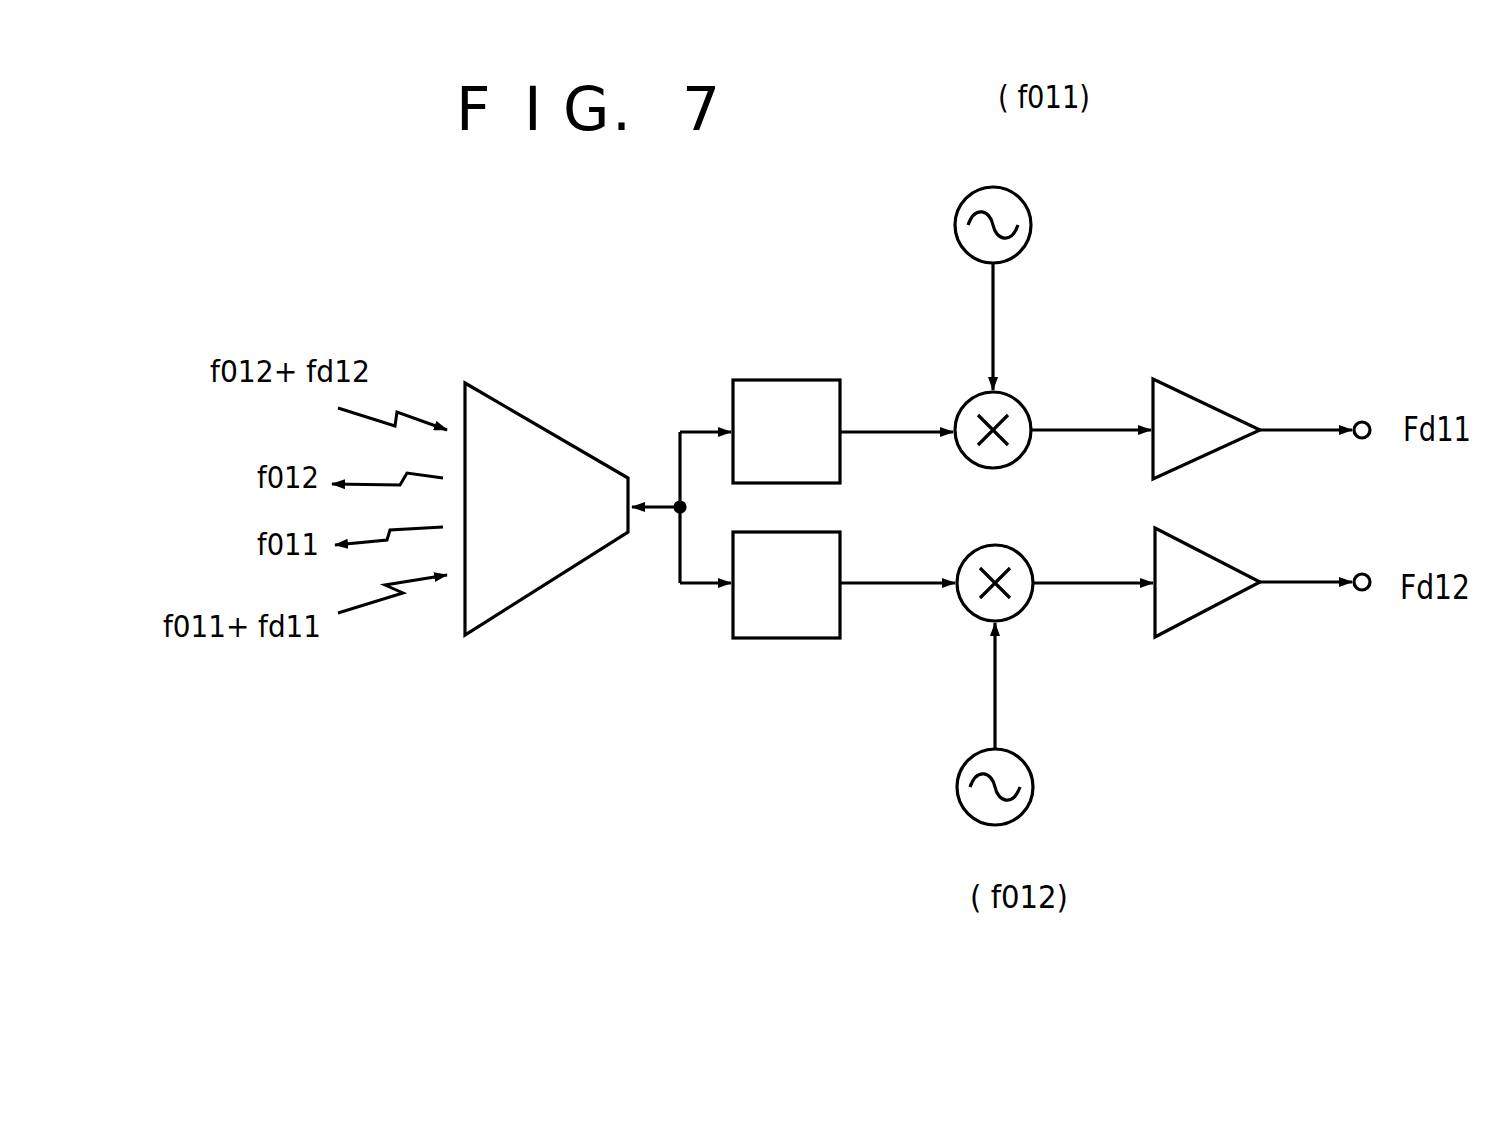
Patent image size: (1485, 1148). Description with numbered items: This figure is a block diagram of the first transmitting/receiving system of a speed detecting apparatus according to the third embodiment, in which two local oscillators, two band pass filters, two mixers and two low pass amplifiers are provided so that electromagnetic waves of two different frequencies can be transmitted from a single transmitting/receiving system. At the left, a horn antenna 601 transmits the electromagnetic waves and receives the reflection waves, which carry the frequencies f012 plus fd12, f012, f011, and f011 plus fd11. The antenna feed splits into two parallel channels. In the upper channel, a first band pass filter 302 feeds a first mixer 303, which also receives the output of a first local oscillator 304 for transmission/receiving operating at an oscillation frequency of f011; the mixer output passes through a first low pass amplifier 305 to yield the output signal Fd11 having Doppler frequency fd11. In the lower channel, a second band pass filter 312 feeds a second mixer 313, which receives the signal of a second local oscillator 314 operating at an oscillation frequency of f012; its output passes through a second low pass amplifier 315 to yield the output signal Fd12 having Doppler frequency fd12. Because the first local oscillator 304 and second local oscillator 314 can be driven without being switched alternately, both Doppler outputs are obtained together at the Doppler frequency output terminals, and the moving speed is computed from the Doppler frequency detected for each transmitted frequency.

The horn antenna 601 is at (546, 427).
The first band pass filter 302 is at (790, 380).
The second band pass filter 312 is at (815, 638).
The first mixer 303 is at (962, 456).
The second mixer 313 is at (965, 558).
The first local oscillator 304 is at (998, 186).
The second local oscillator 314 is at (962, 800).
The first low pass amplifier 305 is at (1202, 400).
The second low pass filter 315 is at (1210, 608).